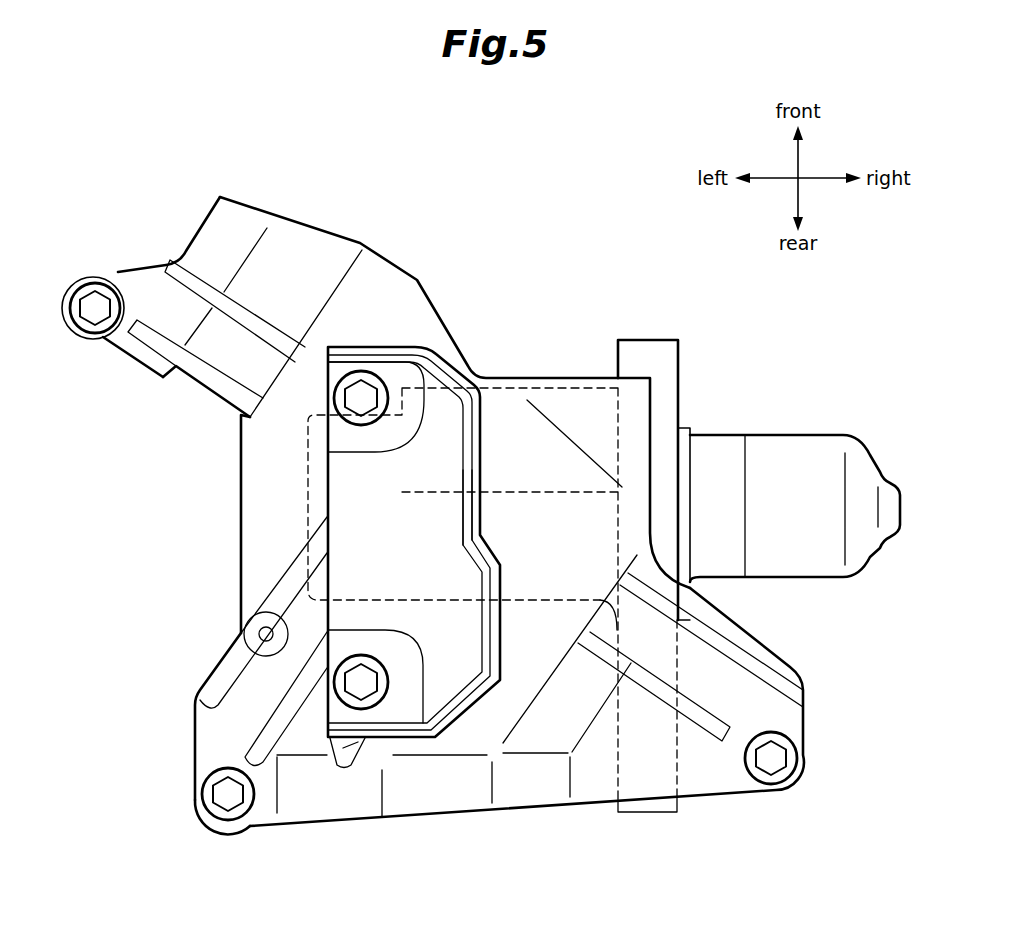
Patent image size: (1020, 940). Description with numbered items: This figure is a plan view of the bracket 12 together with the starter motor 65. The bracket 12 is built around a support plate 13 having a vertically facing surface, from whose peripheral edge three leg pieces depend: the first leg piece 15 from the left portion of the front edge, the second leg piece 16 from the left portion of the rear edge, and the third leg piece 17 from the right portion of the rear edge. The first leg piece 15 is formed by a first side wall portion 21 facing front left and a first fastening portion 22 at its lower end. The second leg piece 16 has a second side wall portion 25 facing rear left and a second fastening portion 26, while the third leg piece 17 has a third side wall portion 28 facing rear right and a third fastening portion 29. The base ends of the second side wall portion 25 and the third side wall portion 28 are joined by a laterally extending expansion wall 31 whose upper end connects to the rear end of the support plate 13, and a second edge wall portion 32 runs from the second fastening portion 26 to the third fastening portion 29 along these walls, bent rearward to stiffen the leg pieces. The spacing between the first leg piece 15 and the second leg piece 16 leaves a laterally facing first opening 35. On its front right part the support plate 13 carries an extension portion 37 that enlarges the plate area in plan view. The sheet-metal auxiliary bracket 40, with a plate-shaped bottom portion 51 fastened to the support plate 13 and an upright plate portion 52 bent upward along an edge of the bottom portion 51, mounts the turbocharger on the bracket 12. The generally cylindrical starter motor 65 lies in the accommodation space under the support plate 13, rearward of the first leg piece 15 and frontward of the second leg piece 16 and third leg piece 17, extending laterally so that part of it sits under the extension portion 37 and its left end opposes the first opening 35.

The bracket 12 is at (396, 257).
The support plate 13 is at (252, 537).
The first leg piece 15 is at (275, 203).
The second leg piece 16 is at (212, 660).
The third leg piece 17 is at (736, 806).
The first side wall portion 21 is at (215, 352).
The first fastening portion 22 is at (140, 280).
The second side wall portion 25 is at (252, 713).
The second fastening portion 26 is at (258, 820).
The third side wall portion 28 is at (580, 715).
The third fastening portion 29 is at (790, 725).
The expansion wall 31 is at (473, 745).
The second edge wall portion 32 is at (400, 803).
The first opening 35 is at (240, 598).
The extension portion 37 is at (640, 388).
The auxiliary bracket 40 is at (406, 340).
The bottom portion 51 is at (335, 481).
The upright plate portion 52 is at (478, 475).
The starter motor 65 is at (722, 447).